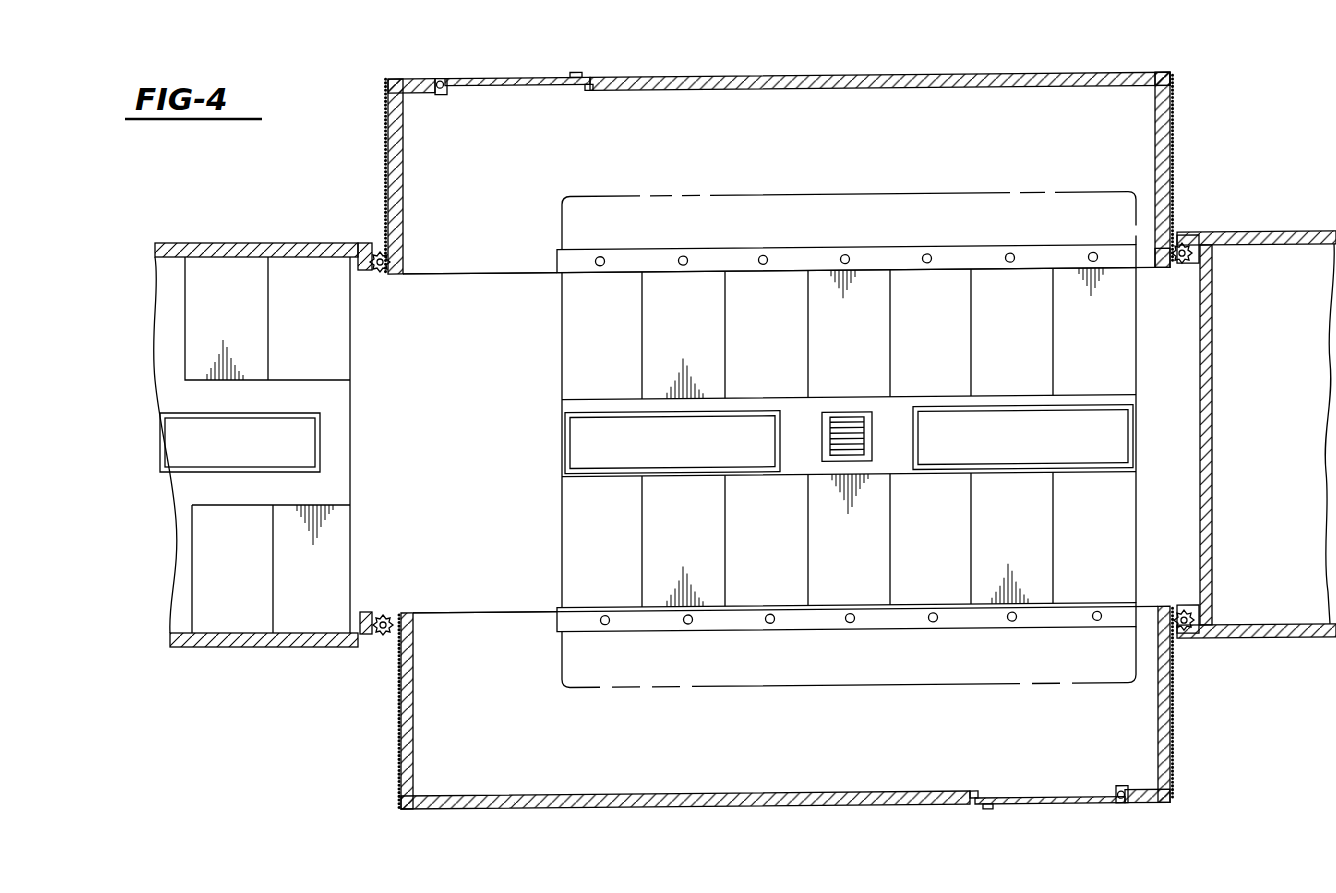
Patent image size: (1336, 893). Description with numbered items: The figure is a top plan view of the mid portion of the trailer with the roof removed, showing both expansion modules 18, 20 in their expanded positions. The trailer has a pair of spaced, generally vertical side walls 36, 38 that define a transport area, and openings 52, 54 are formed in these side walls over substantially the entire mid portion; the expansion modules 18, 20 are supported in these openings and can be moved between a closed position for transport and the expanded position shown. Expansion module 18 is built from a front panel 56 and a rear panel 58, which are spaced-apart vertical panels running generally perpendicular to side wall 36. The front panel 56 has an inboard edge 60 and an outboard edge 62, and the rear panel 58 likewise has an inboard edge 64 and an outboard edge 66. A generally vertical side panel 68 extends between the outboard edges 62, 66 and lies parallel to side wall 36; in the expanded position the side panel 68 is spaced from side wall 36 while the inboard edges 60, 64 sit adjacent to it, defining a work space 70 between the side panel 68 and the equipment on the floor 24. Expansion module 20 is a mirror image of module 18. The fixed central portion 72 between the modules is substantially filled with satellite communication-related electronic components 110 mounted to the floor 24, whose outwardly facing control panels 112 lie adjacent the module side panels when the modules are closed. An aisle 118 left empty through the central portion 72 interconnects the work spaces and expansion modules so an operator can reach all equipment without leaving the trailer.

The expansion module 18 is at (1138, 130).
The expansion module 20 is at (1168, 750).
The floor 24 is at (446, 511).
The side wall 36 is at (1290, 232).
The side wall 38 is at (1280, 640).
The opening 52 is at (1175, 232).
The opening 54 is at (1175, 640).
The front panel 56 is at (1174, 94).
The rear panel 58 is at (402, 146).
The inboard edge 60 is at (1153, 268).
The outboard edge 62 is at (1166, 78).
The inboard edge 64 is at (398, 284).
The outboard edge 66 is at (393, 79).
The side panel 68 is at (820, 79).
The work space 70 is at (910, 151).
The central portion 72 is at (512, 402).
The satellite communication-related electronic components 110 is at (578, 311).
The control panels 112 is at (644, 270).
The aisle 118 is at (420, 452).